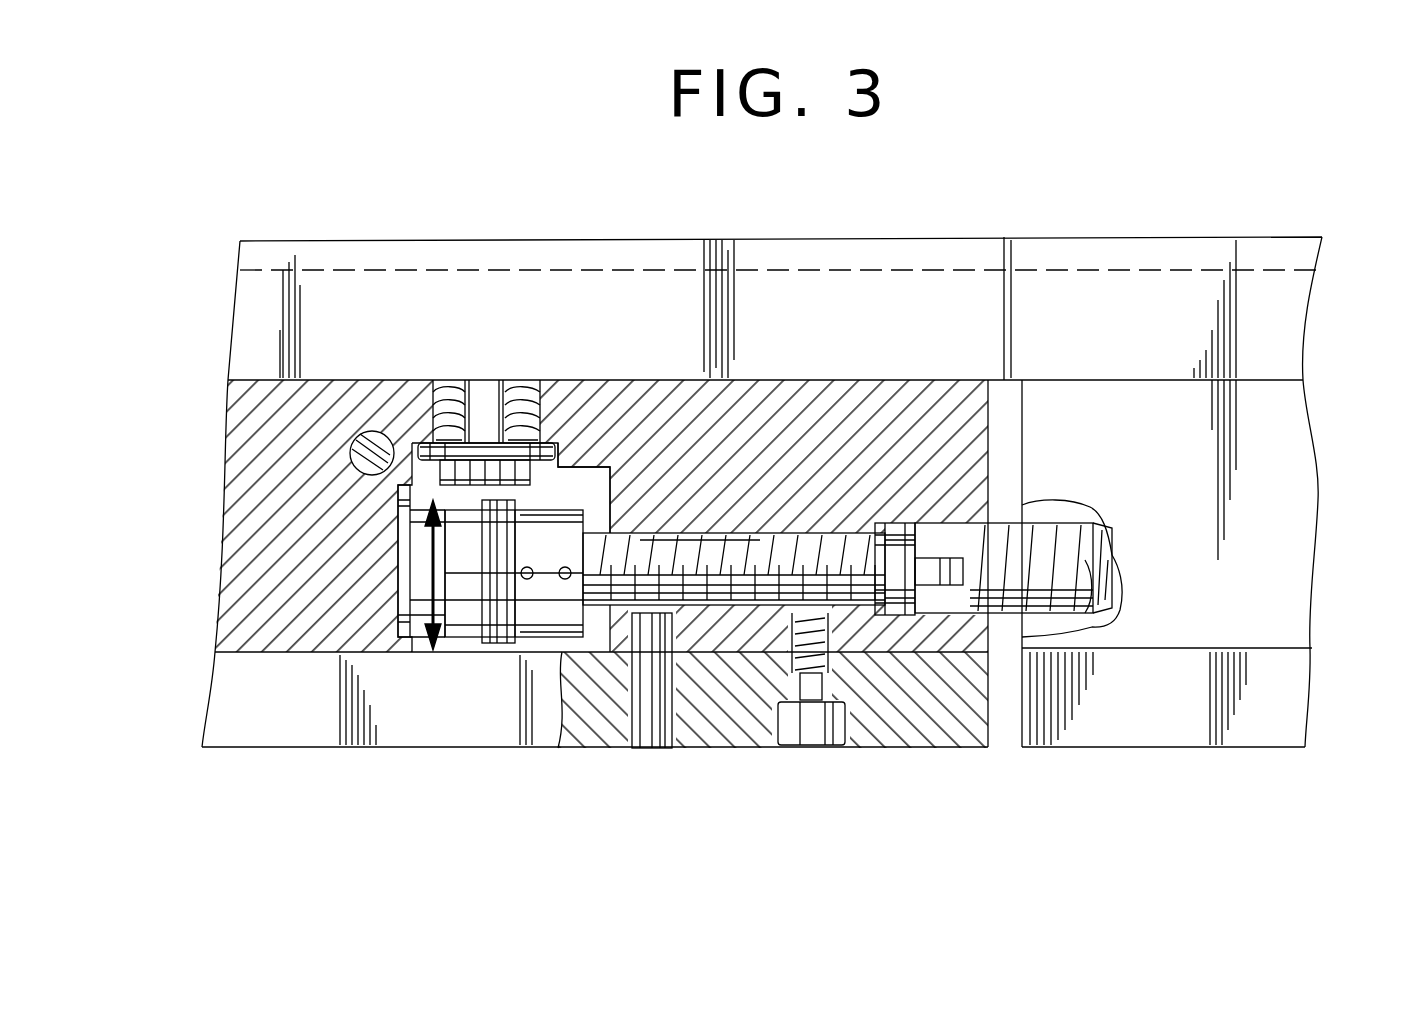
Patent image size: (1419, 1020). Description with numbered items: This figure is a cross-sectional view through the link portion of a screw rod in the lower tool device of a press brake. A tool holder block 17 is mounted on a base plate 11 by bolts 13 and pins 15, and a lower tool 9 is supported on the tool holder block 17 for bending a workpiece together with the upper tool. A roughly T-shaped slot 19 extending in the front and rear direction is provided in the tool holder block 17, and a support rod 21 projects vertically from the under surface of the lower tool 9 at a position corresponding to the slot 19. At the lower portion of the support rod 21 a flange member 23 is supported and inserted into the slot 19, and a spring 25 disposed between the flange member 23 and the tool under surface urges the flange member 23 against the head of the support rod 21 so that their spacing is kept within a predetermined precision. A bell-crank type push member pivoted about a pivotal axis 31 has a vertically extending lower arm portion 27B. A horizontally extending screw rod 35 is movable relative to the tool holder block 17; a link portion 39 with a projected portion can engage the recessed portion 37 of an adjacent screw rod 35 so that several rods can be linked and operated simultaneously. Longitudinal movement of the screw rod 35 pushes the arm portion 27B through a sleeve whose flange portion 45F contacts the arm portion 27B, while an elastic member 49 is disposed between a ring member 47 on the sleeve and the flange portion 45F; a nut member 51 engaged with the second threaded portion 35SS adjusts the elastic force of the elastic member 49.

The lower tool 9 is at (628, 258).
The base plate 11 is at (307, 727).
The bolt 13 is at (800, 720).
The pin 15 is at (642, 730).
The tool holder block 17 is at (215, 490).
The T-shaped slot 19 is at (600, 480).
The support rod 21 is at (485, 395).
The flange member 23 is at (572, 440).
The spring 25 is at (535, 440).
The lower arm portion 27B is at (398, 555).
The pivotal axis 31 is at (362, 432).
The screw rod 35 is at (640, 540).
The second threaded portion 35SS is at (762, 535).
The recessed portion 37 is at (922, 560).
The link portion 39 is at (922, 590).
The flange portion 45F is at (398, 605).
The ring member 47 is at (470, 650).
The elastic member 49 is at (433, 655).
The nut member 51 is at (590, 645).